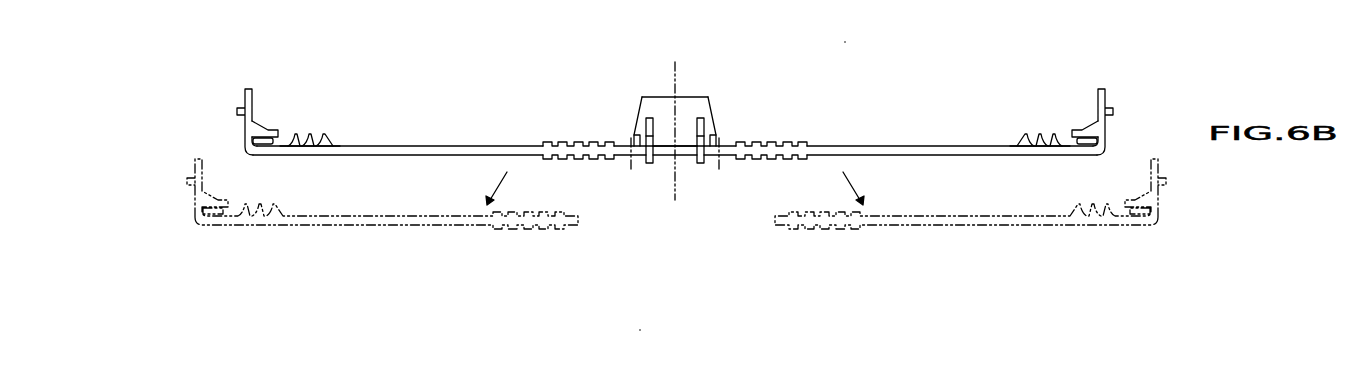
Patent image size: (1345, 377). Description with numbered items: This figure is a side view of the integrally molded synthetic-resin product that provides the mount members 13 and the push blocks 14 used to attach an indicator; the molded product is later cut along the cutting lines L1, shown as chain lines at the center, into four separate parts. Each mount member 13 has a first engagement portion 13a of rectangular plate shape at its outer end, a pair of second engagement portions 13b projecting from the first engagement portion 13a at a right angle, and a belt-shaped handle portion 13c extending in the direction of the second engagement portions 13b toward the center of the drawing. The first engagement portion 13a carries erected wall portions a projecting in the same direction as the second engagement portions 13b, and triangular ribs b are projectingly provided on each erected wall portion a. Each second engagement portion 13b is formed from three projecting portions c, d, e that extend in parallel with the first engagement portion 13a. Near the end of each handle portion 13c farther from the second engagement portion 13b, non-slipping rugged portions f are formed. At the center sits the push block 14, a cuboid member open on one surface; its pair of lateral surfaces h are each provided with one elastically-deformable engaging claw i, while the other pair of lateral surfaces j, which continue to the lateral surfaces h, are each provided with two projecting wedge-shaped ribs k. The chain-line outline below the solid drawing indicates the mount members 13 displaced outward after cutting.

The mount member 13 is at (233, 104).
The first engagement portion 13a is at (251, 88).
The second engagement portion 13b is at (309, 150).
The handle portion 13c is at (438, 147).
The push block 14 is at (694, 90).
The erected wall portion a is at (263, 143).
The triangular rib b is at (262, 127).
The projecting portion c is at (291, 139).
The projecting portion d is at (306, 141).
The projecting portion e is at (319, 140).
The non-slipping rugged portion f is at (604, 142).
The lateral surface h is at (643, 104).
The engaging claw i is at (634, 133).
The lateral surface j is at (665, 118).
The wedge-shaped rib k is at (698, 143).
The cutting line L1 is at (631, 178).